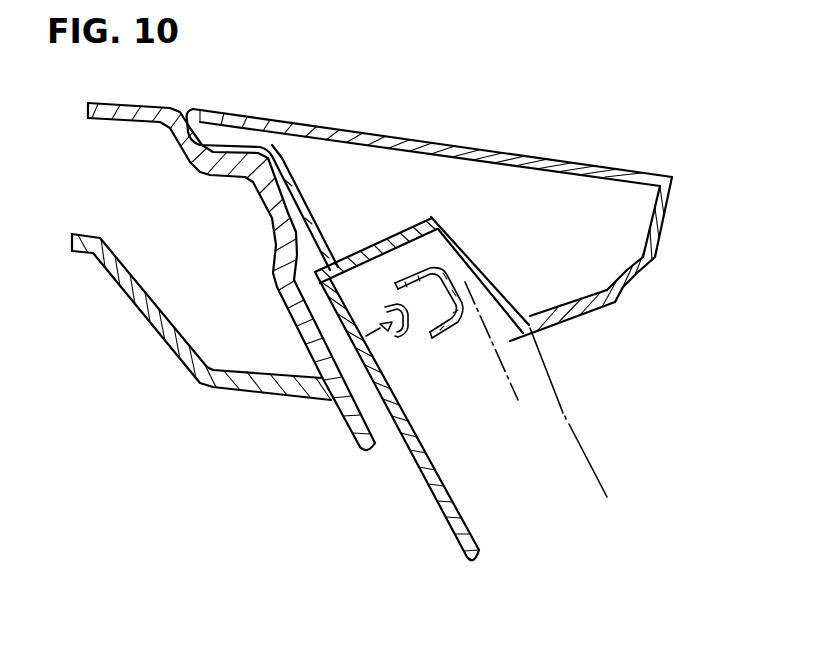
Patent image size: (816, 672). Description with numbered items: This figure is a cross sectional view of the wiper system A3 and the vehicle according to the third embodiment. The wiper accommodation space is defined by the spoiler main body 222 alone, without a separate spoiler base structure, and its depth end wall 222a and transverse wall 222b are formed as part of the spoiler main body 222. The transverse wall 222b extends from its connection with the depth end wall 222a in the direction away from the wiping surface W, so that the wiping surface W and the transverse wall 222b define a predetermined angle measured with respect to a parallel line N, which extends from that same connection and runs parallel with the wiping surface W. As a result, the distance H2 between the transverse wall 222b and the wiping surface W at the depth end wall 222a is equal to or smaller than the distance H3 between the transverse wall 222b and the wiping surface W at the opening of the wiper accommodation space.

The spoiler main body 222 is at (517, 153).
The depth end wall 222a is at (386, 242).
The transverse wall 222b is at (517, 303).
The wiper system A3 is at (418, 88).
The distance between transverse wall and wiping surface at depth end wall H2 is at (504, 396).
The distance between transverse wall and wiping surface at opening H3 is at (580, 476).
The parallel line N is at (520, 404).
The wiping surface W is at (477, 547).